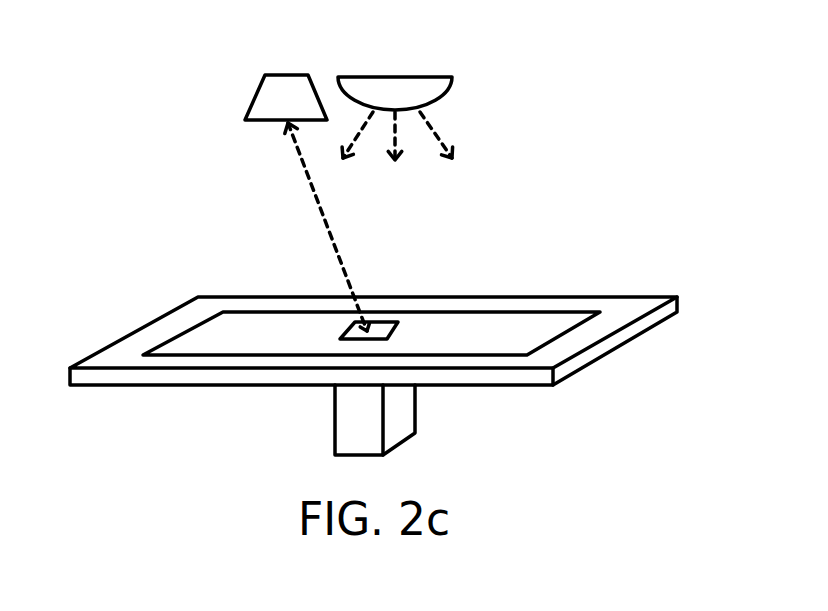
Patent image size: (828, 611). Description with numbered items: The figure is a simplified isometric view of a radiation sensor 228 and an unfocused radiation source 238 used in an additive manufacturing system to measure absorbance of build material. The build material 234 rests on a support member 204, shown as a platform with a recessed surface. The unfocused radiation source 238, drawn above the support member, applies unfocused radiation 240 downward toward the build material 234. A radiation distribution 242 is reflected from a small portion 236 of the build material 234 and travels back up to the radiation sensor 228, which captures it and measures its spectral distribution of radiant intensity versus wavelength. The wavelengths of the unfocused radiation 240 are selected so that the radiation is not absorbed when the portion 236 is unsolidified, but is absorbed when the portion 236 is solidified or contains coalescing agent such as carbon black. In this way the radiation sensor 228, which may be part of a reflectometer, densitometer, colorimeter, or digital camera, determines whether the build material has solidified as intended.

The support member 204 is at (503, 295).
The radiation sensor 228 is at (298, 73).
The build material 234 is at (235, 312).
The portion of the build material 236 is at (387, 339).
The unfocused radiation source 238 is at (448, 85).
The unfocused radiation 240 is at (402, 155).
The radiation distribution 242 is at (313, 197).